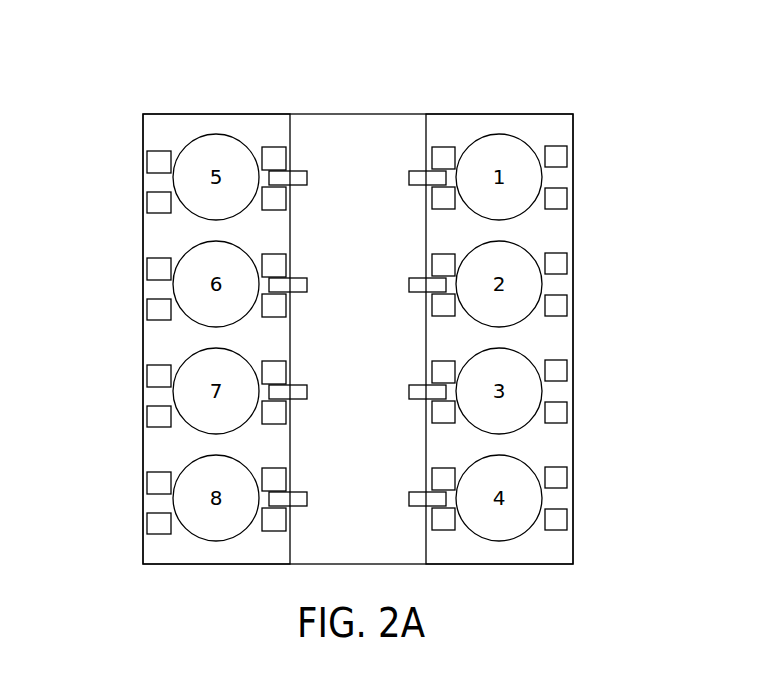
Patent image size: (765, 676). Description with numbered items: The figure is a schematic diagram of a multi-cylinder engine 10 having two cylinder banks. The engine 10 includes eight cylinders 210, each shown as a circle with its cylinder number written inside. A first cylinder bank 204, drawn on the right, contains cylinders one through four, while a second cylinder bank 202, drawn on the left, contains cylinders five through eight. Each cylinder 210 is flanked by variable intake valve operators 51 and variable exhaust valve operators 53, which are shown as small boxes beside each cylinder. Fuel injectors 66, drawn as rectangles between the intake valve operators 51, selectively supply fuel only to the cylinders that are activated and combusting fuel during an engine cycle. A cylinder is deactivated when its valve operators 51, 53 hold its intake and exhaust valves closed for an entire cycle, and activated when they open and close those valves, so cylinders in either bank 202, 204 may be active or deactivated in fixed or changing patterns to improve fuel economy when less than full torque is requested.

The engine 10 is at (436, 31).
The second cylinder bank 202 is at (205, 60).
The first cylinder bank 204 is at (536, 66).
The cylinders 210 is at (173, 180).
The variable intake valve operators 51 is at (278, 159).
The variable exhaust valve operators 53 is at (160, 163).
The fuel injectors 66 is at (298, 181).